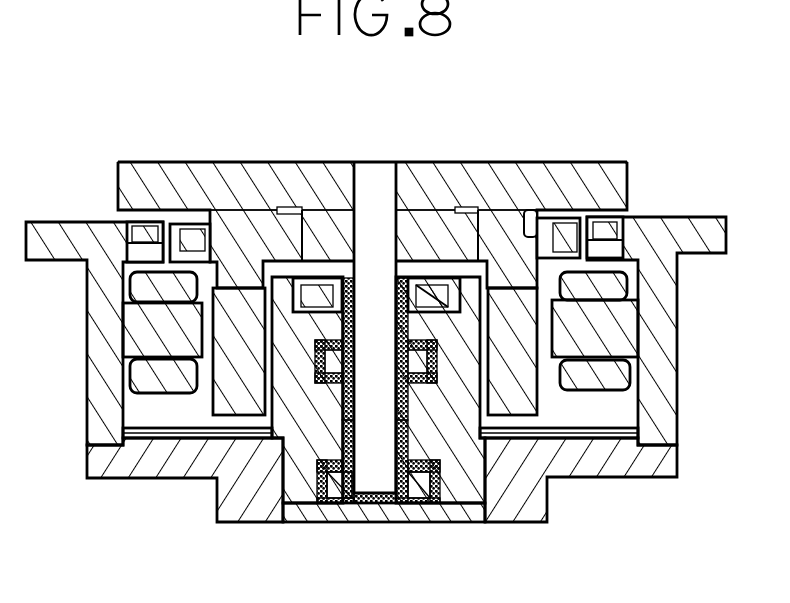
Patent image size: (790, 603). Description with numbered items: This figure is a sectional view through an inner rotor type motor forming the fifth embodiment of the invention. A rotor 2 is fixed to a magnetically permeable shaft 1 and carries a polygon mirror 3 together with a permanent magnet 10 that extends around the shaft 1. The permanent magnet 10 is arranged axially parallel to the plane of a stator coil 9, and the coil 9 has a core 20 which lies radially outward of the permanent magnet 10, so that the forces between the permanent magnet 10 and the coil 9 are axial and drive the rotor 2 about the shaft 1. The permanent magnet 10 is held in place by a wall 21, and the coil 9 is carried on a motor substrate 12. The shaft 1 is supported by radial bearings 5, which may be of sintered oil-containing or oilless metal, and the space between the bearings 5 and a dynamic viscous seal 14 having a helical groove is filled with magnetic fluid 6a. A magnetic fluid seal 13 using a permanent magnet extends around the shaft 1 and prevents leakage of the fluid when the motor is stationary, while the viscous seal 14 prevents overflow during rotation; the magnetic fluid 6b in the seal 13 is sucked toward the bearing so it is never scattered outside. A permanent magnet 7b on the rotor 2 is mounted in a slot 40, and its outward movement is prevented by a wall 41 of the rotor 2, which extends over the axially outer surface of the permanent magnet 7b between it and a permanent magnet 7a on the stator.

The shaft 1 is at (375, 175).
The rotor 2 is at (440, 175).
The polygon mirror 3 is at (123, 175).
The radial bearings 5 is at (283, 505).
The magnetic fluid 6a is at (410, 433).
The magnetic fluid 6b is at (343, 260).
The permanent magnet 7a is at (152, 224).
The permanent magnet 7b is at (193, 236).
The stator coil 9 is at (623, 277).
The permanent magnet 10 is at (520, 382).
The motor substrate 12 is at (160, 436).
The magnetic fluid seal 13 is at (442, 292).
The dynamic viscous seal 14 is at (418, 292).
The core 20 is at (625, 315).
The wall 21 is at (548, 477).
The slot 40 is at (528, 235).
The wall 41 is at (623, 218).